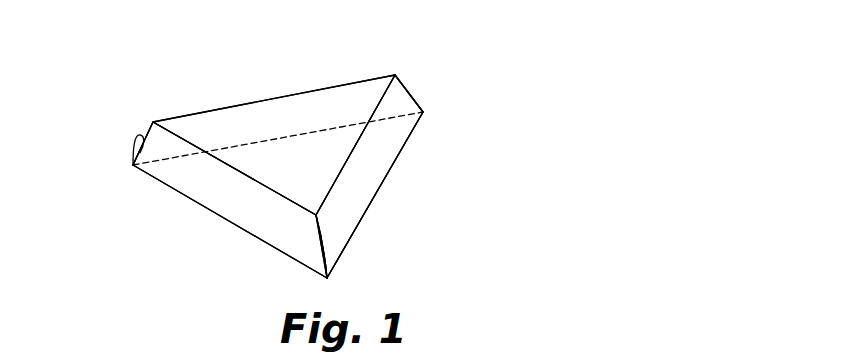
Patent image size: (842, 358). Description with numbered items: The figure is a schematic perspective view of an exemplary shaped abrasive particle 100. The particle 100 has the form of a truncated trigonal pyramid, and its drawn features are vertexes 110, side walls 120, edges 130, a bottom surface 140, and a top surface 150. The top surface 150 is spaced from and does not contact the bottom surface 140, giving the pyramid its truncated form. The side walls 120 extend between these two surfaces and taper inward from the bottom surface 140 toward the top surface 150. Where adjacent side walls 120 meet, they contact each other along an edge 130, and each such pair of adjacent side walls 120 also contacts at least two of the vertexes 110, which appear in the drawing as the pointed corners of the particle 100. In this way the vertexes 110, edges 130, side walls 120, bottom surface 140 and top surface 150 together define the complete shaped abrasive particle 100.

The shaped abrasive particle 100 is at (440, 38).
The vertex 110 is at (153, 122).
The side wall 120 is at (340, 110).
The edge 130 is at (412, 92).
The bottom surface 140 is at (358, 188).
The top surface 150 is at (260, 117).